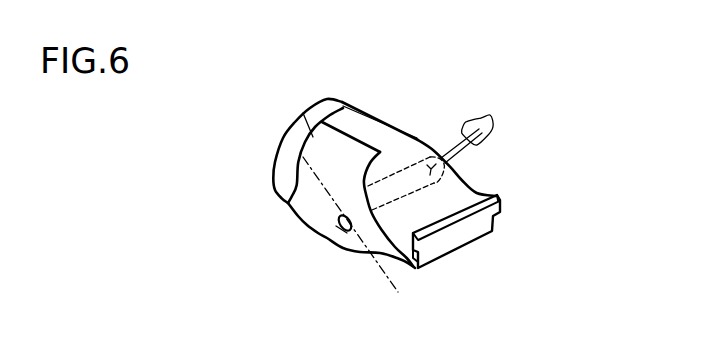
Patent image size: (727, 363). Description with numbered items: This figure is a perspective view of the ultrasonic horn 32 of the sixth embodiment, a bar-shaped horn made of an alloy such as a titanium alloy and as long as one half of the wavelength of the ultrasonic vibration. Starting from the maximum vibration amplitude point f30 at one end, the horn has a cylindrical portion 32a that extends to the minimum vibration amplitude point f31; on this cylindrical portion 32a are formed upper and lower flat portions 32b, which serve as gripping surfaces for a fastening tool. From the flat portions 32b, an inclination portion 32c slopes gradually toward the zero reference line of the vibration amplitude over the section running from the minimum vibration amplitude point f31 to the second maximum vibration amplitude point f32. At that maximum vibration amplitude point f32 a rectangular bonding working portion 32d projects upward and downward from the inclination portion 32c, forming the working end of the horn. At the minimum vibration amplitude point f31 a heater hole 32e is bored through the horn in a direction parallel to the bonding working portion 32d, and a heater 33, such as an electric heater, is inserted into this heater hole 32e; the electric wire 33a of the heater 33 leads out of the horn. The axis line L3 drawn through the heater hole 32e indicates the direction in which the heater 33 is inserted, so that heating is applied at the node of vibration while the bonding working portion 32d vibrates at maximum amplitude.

The ultrasonic horn 32 is at (303, 224).
The cylindrical portion 32a is at (303, 113).
The flat portions 32b is at (373, 132).
The inclination portion 32c is at (471, 183).
The bonding working portion 32d is at (455, 213).
The heater hole 32e is at (351, 233).
The heater 33 is at (430, 192).
The electric wire 33a is at (490, 115).
The axis L3 is at (300, 150).
The maximum vibration amplitude point f30 is at (270, 187).
The minimum vibration amplitude point f31 is at (347, 237).
The maximum vibration amplitude point f32 is at (418, 258).